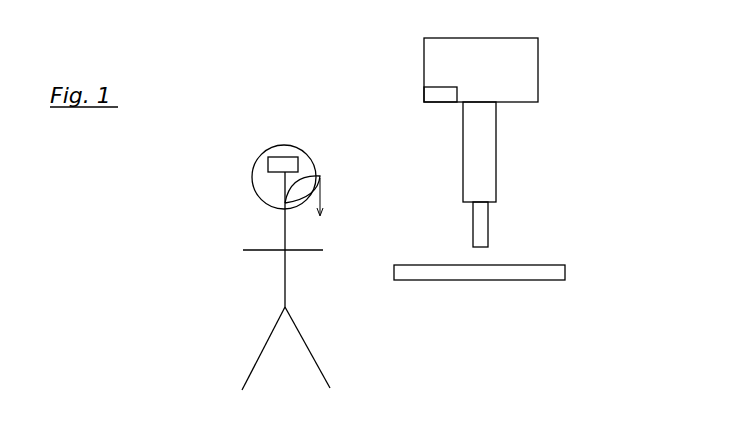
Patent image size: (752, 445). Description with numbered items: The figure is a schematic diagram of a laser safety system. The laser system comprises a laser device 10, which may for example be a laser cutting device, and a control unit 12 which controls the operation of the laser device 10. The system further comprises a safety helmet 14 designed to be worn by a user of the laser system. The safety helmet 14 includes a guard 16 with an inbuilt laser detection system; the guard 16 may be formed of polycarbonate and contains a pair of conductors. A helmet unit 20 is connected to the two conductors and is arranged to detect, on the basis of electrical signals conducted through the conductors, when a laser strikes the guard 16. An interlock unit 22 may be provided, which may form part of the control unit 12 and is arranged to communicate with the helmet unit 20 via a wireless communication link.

The laser device 10 is at (490, 222).
The control unit 12 is at (538, 68).
The safety helmet 14 is at (241, 267).
The guard 16 is at (320, 178).
The helmet unit 20 is at (283, 156).
The interlock unit 22 is at (424, 90).